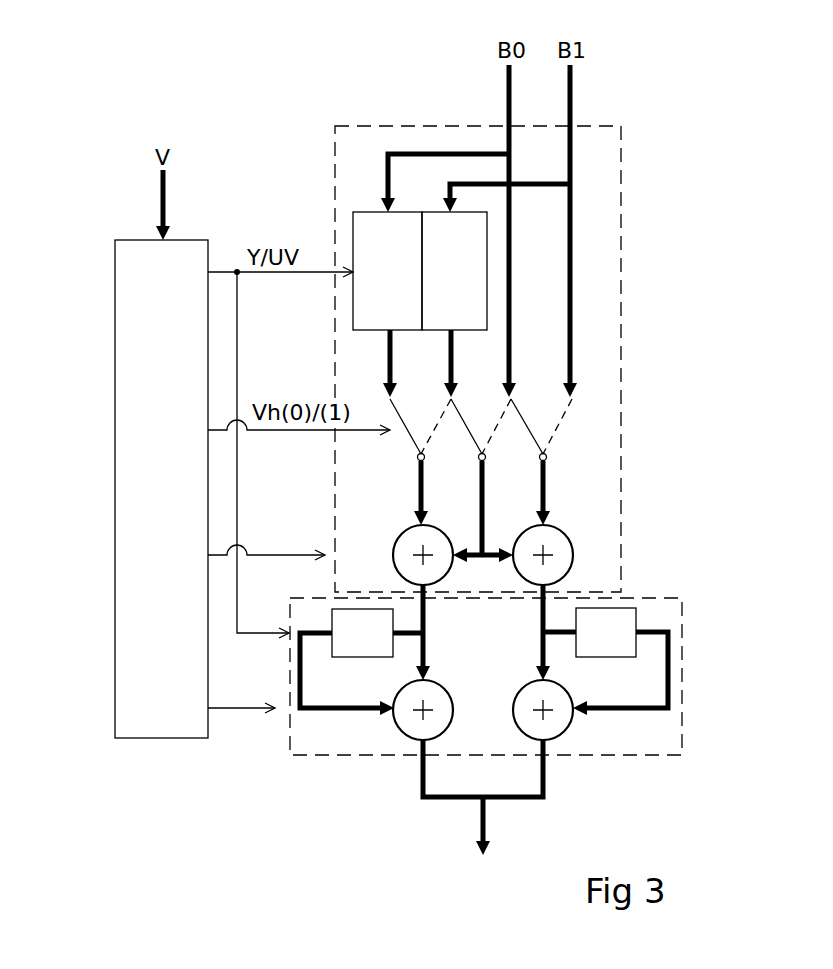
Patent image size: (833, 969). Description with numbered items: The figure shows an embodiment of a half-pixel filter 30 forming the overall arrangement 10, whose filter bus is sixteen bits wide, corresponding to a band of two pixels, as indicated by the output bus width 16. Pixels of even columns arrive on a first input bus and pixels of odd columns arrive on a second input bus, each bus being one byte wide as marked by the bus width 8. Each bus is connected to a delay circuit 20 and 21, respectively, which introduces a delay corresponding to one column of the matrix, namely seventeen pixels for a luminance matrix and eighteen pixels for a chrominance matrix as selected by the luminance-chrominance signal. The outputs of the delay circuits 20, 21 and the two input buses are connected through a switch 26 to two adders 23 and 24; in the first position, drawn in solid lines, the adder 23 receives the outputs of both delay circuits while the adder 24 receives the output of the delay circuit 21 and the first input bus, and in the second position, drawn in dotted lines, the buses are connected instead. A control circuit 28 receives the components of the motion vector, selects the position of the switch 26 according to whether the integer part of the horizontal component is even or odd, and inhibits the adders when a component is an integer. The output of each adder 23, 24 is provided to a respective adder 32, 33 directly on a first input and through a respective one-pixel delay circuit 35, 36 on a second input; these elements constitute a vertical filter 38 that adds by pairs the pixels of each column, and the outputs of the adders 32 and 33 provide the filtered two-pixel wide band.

The video processing apparatus 10 is at (706, 133).
The 8-bit bus width 8 is at (519, 87).
The 16-bit output bus 16 is at (473, 830).
The delay circuit 20 is at (375, 228).
The delay circuit 21 is at (432, 222).
The adder 23 is at (408, 550).
The adder 24 is at (570, 545).
The switch 26 is at (597, 417).
The control circuit 28 is at (172, 736).
The half-pixel filter 30 is at (622, 262).
The adder 32 is at (408, 722).
The adder 33 is at (568, 725).
The one-pixel delay circuit 35 is at (347, 660).
The one-pixel delay circuit 36 is at (627, 617).
The vertical filter 38 is at (683, 665).